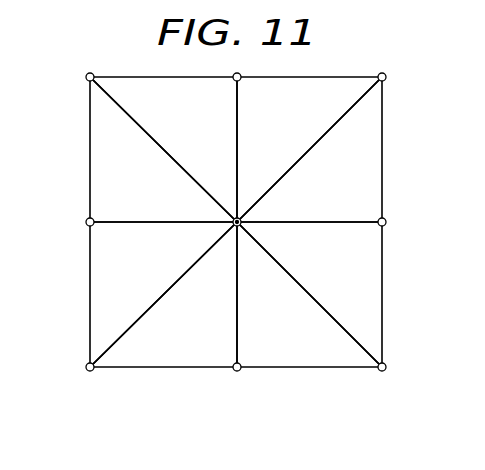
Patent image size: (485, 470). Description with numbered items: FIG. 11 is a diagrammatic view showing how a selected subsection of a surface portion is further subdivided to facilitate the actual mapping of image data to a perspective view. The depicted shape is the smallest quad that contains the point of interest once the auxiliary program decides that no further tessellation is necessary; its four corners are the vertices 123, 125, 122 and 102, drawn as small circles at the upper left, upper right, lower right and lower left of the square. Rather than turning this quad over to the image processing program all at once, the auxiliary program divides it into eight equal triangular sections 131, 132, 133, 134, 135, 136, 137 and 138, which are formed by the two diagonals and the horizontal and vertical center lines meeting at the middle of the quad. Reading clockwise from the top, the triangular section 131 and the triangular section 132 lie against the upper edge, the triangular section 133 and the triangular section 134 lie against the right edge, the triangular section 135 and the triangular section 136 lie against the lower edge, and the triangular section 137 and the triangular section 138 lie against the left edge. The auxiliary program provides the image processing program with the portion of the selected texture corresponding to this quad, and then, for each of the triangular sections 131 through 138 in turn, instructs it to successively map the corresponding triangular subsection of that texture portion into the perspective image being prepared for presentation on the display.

The vertex 102 is at (91, 372).
The vertex 122 is at (384, 372).
The vertex 123 is at (86, 71).
The vertex 125 is at (385, 71).
The triangular section 131 is at (213, 132).
The triangular section 132 is at (298, 132).
The triangular section 133 is at (355, 191).
The triangular section 134 is at (355, 276).
The triangular section 135 is at (300, 337).
The triangular section 136 is at (213, 337).
The triangular section 137 is at (160, 276).
The triangular section 138 is at (160, 191).